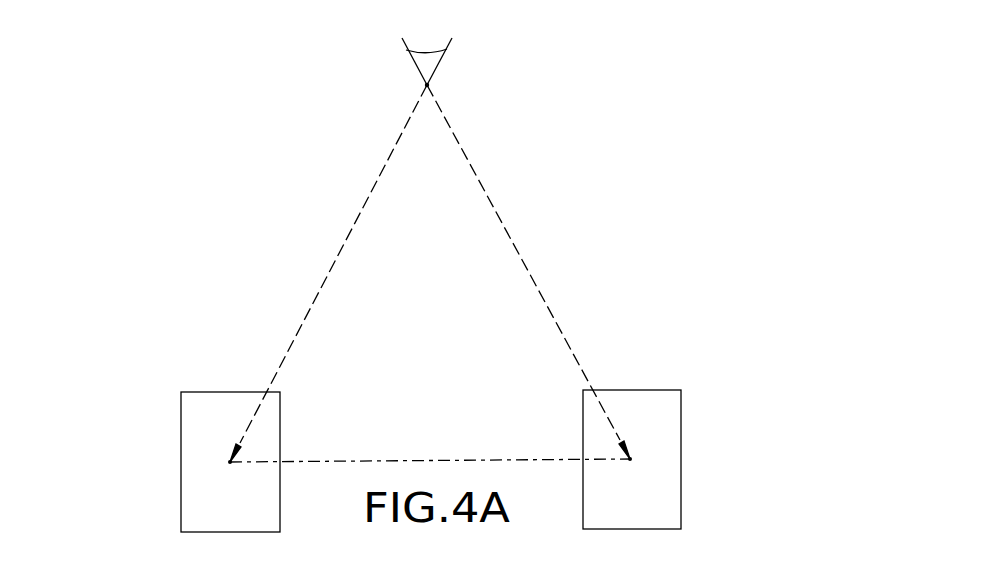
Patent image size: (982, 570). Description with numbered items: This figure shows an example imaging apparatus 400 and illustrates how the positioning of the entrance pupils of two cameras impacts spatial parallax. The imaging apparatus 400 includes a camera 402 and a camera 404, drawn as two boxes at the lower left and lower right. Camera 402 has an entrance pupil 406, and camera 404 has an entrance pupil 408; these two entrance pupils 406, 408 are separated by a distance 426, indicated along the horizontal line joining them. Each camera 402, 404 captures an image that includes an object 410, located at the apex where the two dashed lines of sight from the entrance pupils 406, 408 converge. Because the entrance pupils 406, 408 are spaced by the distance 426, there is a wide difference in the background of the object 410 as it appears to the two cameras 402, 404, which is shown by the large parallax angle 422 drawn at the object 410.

The imaging apparatus 400 is at (247, 93).
The camera 402 is at (181, 407).
The camera 404 is at (681, 402).
The entrance pupil 406 is at (230, 462).
The entrance pupil 408 is at (630, 459).
The object 410 is at (430, 83).
The parallax angle 422 is at (427, 46).
The distance 426 is at (437, 460).